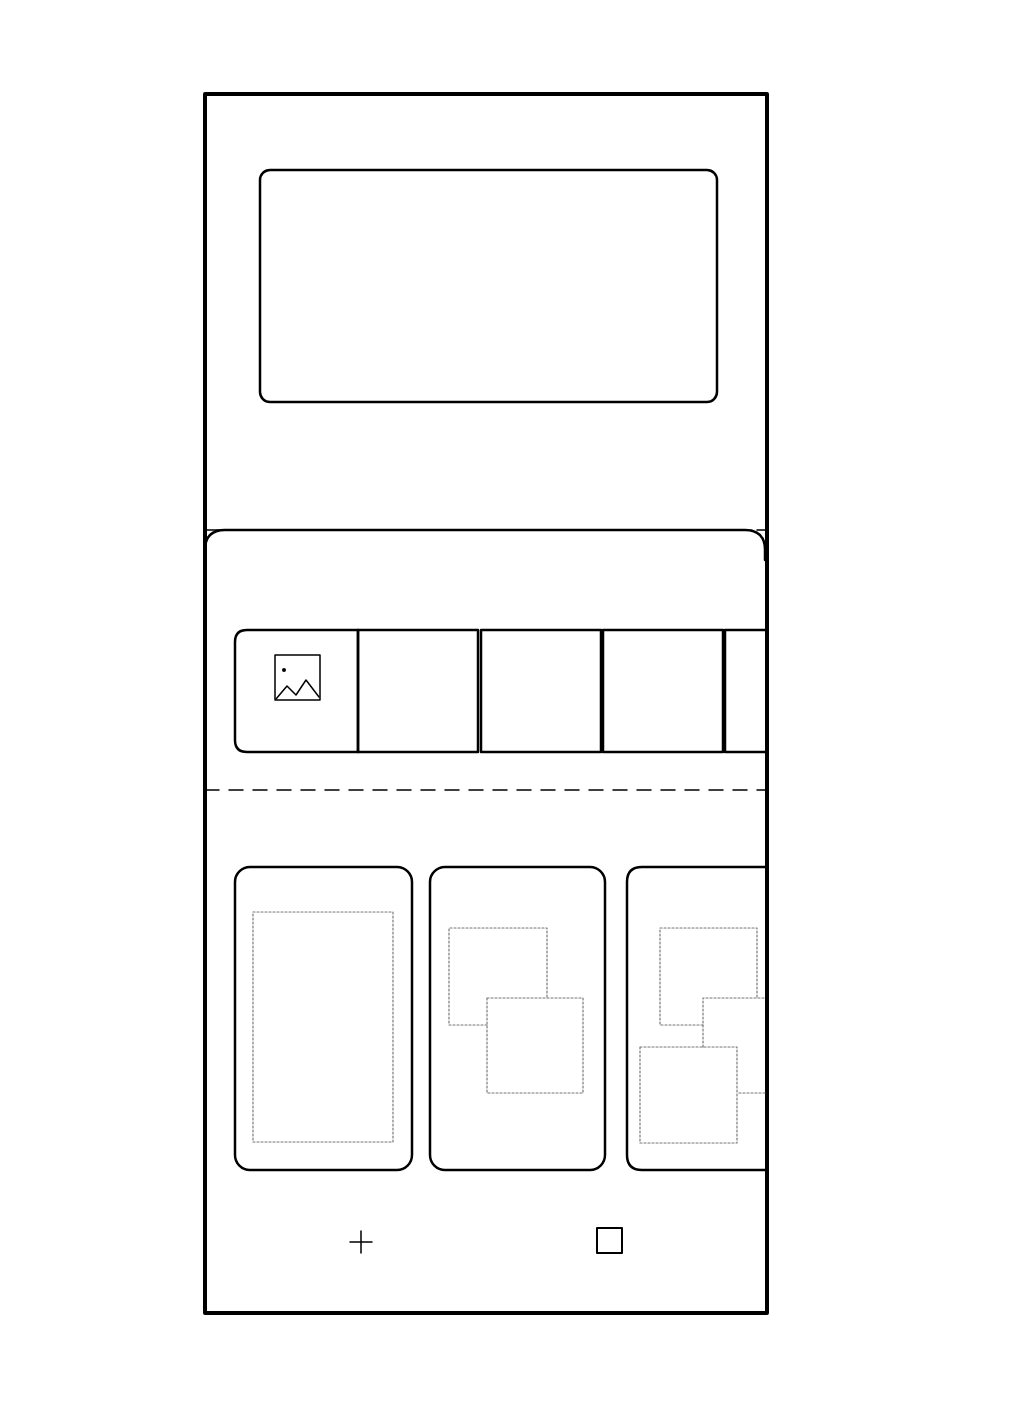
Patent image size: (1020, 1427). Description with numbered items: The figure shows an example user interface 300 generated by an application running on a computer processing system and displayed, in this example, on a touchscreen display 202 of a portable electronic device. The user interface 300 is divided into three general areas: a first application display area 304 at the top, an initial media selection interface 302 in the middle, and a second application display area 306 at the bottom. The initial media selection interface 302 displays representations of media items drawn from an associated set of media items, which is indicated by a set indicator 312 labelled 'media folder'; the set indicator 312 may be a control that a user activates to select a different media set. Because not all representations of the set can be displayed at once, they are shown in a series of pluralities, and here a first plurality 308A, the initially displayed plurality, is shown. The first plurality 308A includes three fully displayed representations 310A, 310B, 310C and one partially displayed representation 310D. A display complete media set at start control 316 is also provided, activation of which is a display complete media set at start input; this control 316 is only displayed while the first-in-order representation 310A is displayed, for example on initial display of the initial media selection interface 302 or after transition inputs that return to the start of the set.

The user interface 300 is at (464, 699).
The touchscreen display 202 is at (582, 92).
The first application display area 304 is at (187, 94).
The initial media selection interface 302 is at (472, 637).
The second application display area 306 is at (187, 790).
The set indicator 312 is at (408, 562).
The first plurality of representations 308A is at (358, 630).
The display complete media set at start control 316 is at (296, 691).
The first representation 310A is at (418, 691).
The second representation 310B is at (541, 691).
The third representation 310C is at (663, 691).
The partially displayed representation 310D is at (770, 700).